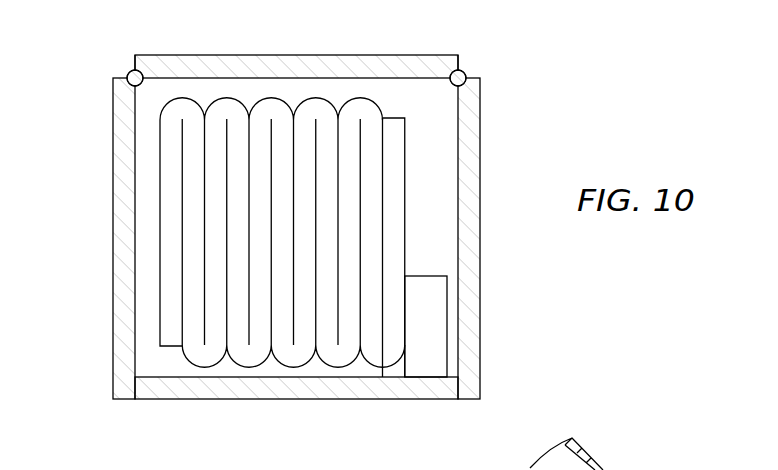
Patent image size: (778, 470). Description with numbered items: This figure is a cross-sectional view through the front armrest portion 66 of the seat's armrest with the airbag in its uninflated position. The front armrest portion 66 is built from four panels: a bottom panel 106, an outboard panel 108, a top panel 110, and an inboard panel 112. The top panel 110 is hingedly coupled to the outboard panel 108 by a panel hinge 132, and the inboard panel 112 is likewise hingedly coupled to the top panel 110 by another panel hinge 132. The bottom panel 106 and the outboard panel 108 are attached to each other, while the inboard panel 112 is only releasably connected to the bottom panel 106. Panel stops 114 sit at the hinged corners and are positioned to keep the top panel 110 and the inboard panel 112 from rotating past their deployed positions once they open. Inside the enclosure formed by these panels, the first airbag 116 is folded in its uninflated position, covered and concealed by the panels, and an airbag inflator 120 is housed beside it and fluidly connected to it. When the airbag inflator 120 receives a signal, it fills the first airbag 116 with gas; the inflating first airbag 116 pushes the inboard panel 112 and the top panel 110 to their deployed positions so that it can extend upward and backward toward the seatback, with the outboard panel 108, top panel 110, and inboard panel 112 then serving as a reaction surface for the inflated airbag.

The front armrest portion 66 is at (507, 140).
The bottom panel 106 is at (290, 400).
The outboard panel 108 is at (480, 276).
The top panel 110 is at (262, 57).
The inboard panel 112 is at (113, 222).
The panel stop 114 is at (128, 72).
The first airbag 116 is at (160, 290).
The airbag inflator 120 is at (448, 318).
The panel hinge 132 is at (137, 60).